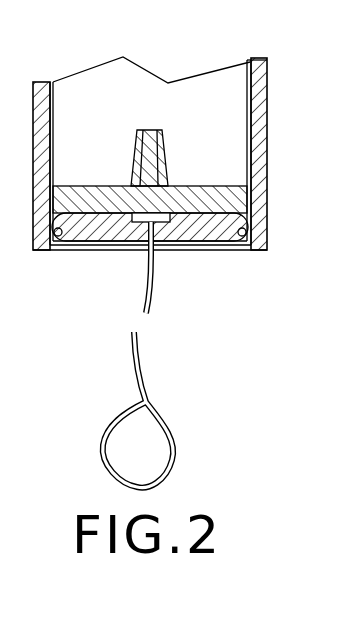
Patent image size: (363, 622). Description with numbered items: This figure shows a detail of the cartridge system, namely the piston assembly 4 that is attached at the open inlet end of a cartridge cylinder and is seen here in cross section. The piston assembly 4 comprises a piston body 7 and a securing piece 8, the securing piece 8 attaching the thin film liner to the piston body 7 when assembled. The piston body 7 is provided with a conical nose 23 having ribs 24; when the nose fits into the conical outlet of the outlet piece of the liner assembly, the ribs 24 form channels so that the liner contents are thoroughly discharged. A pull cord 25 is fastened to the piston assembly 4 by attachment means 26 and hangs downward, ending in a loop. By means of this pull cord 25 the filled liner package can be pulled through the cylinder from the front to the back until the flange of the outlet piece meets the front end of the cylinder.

The piston assembly 4 is at (79, 168).
The piston body 7 is at (192, 184).
The securing piece 8 is at (95, 230).
The conical nose 23 is at (147, 130).
The ribs 24 is at (161, 141).
The pull cord 25 is at (155, 413).
The attachment means 26 is at (158, 222).